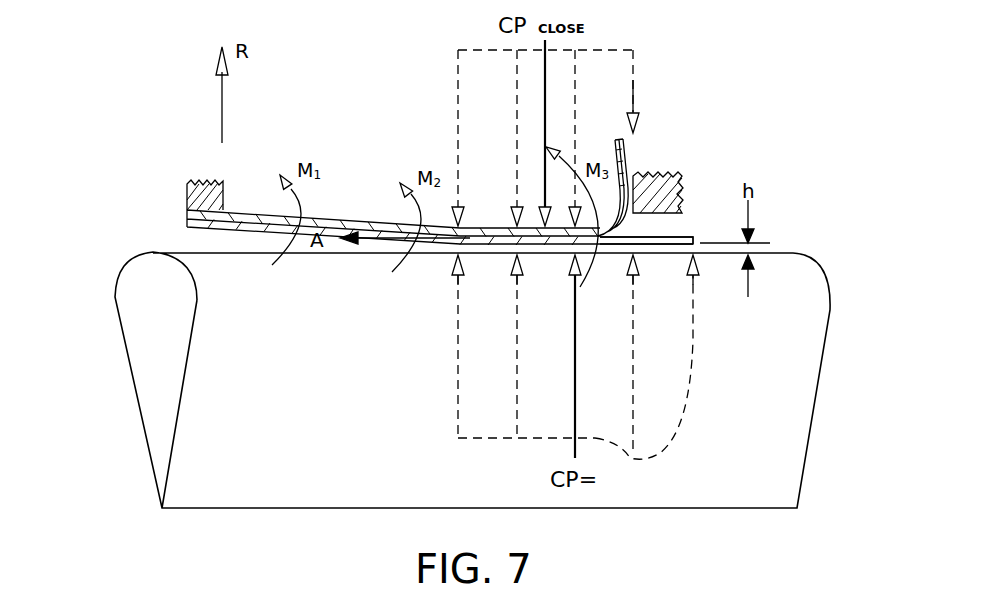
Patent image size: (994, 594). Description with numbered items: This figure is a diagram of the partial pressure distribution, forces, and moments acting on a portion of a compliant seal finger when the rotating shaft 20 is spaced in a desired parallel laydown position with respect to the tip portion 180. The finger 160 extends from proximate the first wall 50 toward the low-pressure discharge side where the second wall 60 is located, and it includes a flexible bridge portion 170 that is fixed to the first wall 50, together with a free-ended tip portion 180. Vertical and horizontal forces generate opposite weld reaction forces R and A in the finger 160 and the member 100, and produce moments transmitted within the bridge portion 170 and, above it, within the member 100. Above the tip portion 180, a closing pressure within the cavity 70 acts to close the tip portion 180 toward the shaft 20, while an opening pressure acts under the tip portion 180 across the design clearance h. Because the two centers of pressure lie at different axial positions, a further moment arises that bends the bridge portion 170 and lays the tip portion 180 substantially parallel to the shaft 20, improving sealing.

The rotating shaft 20 is at (197, 492).
The first wall 50 is at (187, 190).
The second wall 60 is at (655, 173).
The annular cavity 70 is at (408, 104).
The member 100 is at (625, 147).
The finger 160 is at (228, 226).
The flexible bridge portion 170 is at (262, 238).
The tip portion 180 is at (712, 210).